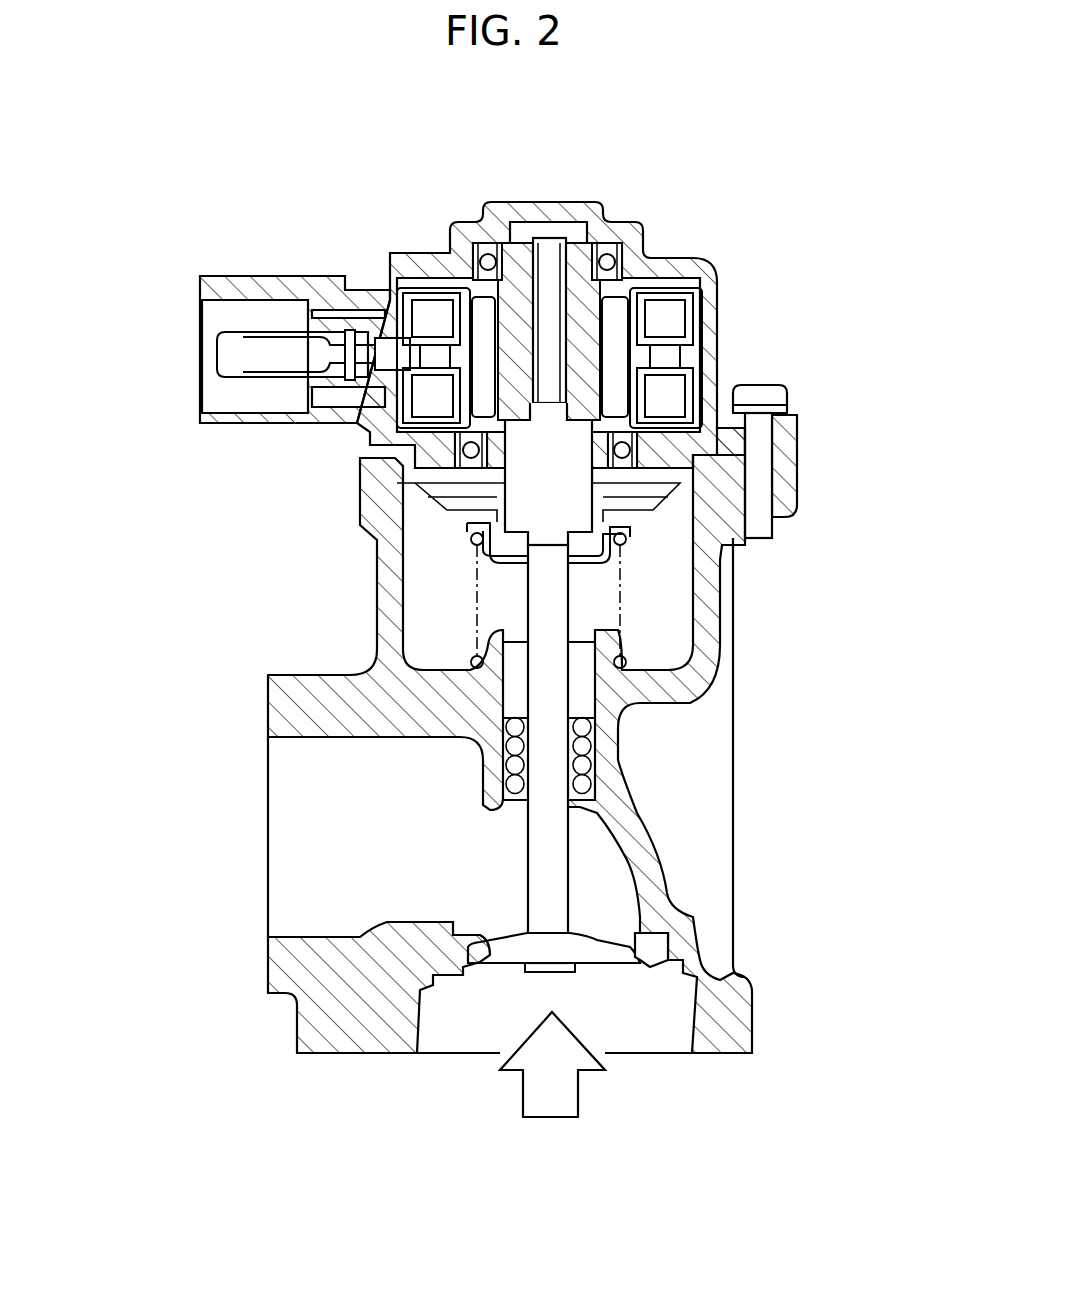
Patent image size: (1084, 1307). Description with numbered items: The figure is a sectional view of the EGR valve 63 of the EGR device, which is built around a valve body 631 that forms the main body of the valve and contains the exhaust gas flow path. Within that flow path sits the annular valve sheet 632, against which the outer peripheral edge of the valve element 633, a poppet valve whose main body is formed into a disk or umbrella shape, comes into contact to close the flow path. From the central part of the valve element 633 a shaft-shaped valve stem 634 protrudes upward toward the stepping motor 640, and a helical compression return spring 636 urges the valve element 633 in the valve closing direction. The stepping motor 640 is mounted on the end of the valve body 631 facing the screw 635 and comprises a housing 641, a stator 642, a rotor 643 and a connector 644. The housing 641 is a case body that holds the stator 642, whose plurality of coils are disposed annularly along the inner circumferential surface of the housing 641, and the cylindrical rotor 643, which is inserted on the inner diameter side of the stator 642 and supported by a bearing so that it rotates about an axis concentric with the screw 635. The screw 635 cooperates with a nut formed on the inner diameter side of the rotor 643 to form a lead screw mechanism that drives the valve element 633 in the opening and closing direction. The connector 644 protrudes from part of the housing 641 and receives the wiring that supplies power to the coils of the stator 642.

The EGR valve 63 is at (198, 959).
The valve body 631 is at (273, 711).
The valve sheet 632 is at (658, 947).
The valve element 633 is at (592, 939).
The valve stem 634 is at (568, 868).
The screw 635 is at (557, 255).
The return spring 636 is at (620, 593).
The stepping motor 640 is at (767, 229).
The housing 641 is at (478, 218).
The stator 642 is at (680, 316).
The rotor 643 is at (620, 368).
The connector 644 is at (268, 290).